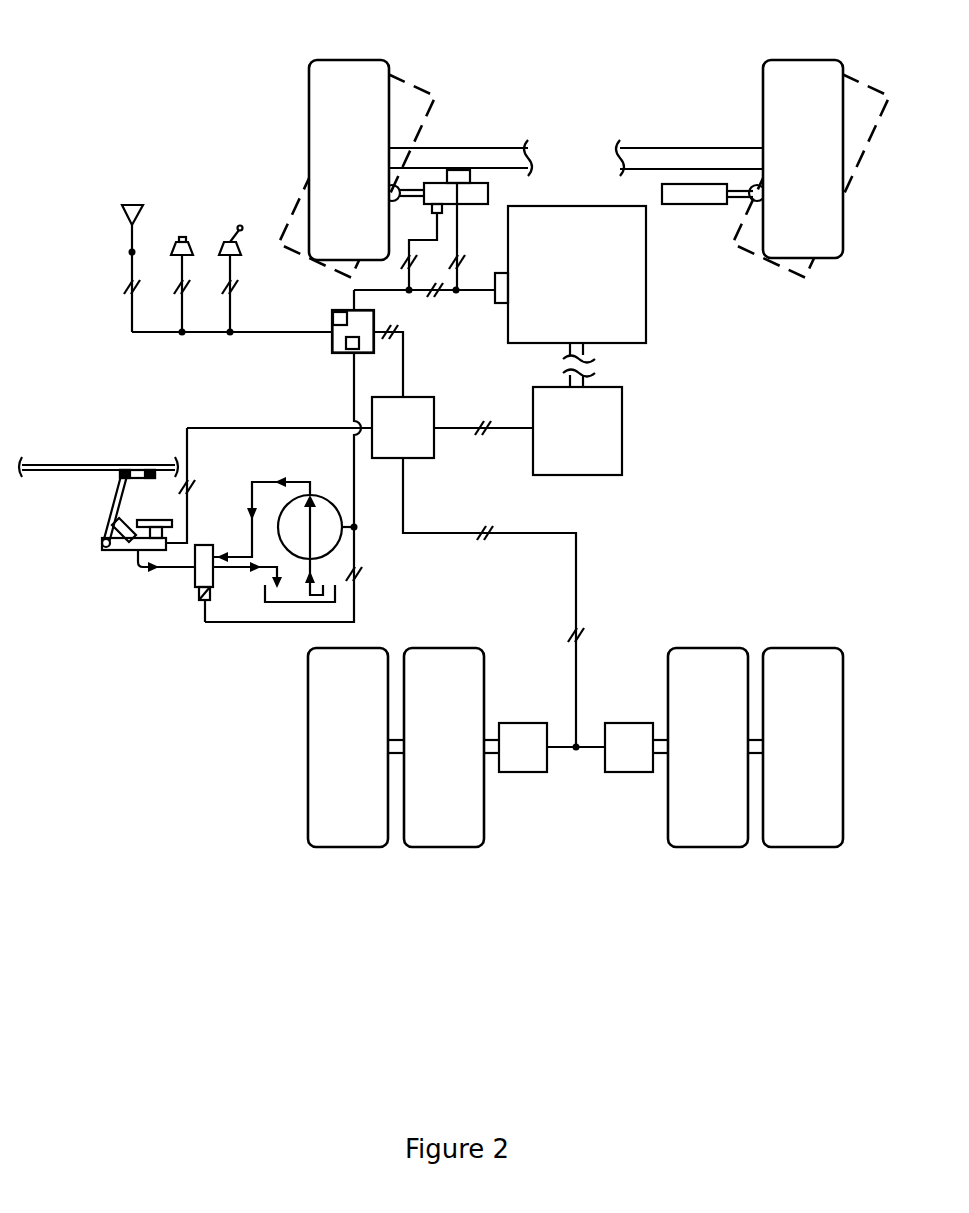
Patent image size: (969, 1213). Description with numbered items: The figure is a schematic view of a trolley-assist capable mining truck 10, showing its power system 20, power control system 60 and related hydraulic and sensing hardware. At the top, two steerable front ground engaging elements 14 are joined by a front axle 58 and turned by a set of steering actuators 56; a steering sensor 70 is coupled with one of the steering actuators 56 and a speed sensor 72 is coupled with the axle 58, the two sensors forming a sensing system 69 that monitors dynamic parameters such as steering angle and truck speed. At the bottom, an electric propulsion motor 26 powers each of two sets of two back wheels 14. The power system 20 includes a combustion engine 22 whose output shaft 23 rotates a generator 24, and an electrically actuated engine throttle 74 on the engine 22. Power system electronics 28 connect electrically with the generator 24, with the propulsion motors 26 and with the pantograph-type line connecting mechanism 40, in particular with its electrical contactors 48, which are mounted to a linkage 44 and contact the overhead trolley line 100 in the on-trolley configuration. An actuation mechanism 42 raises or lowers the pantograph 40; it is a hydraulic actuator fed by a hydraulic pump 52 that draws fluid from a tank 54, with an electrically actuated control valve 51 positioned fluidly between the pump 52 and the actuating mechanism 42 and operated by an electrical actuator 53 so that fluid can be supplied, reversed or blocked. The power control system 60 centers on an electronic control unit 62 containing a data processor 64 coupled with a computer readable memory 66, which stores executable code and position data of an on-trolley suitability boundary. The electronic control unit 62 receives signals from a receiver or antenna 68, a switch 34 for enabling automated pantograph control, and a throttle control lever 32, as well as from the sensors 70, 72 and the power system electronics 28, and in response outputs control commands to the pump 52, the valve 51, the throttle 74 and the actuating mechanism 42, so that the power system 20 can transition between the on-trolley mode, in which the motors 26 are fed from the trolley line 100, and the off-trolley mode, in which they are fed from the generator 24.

The mining truck 10 is at (194, 120).
The ground engaging propulsion elements 14 is at (348, 60).
The power system 20 is at (672, 377).
The combustion engine 22 is at (646, 270).
The output shaft 23 is at (595, 358).
The generator 24 is at (622, 428).
The electric propulsion motor 26 is at (523, 772).
The power system electronics 28 is at (420, 397).
The throttle control lever 32 is at (238, 226).
The switch 34 is at (182, 237).
The line connecting mechanism 40 is at (102, 545).
The actuation mechanism 42 is at (128, 523).
The linkage 44 is at (110, 497).
The electrical contactors 48 is at (125, 470).
The electrically actuated control valve 51 is at (203, 545).
The hydraulic pump 52 is at (322, 496).
The electrical actuator 53 is at (199, 597).
The tank 54 is at (265, 597).
The steering actuators 56 is at (488, 194).
The front axle 58 is at (522, 146).
The power control system 60 is at (289, 442).
The electronic control unit 62 is at (333, 310).
The data processor 64 is at (332, 318).
The computer readable memory 66 is at (346, 345).
The receiver or antenna 68 is at (131, 205).
The sensing system 69 is at (410, 179).
The steering sensor 70 is at (435, 212).
The speed sensor 72 is at (470, 171).
The electrically actuated engine throttle 74 is at (499, 303).
The overhead trolley line 100 is at (191, 490).